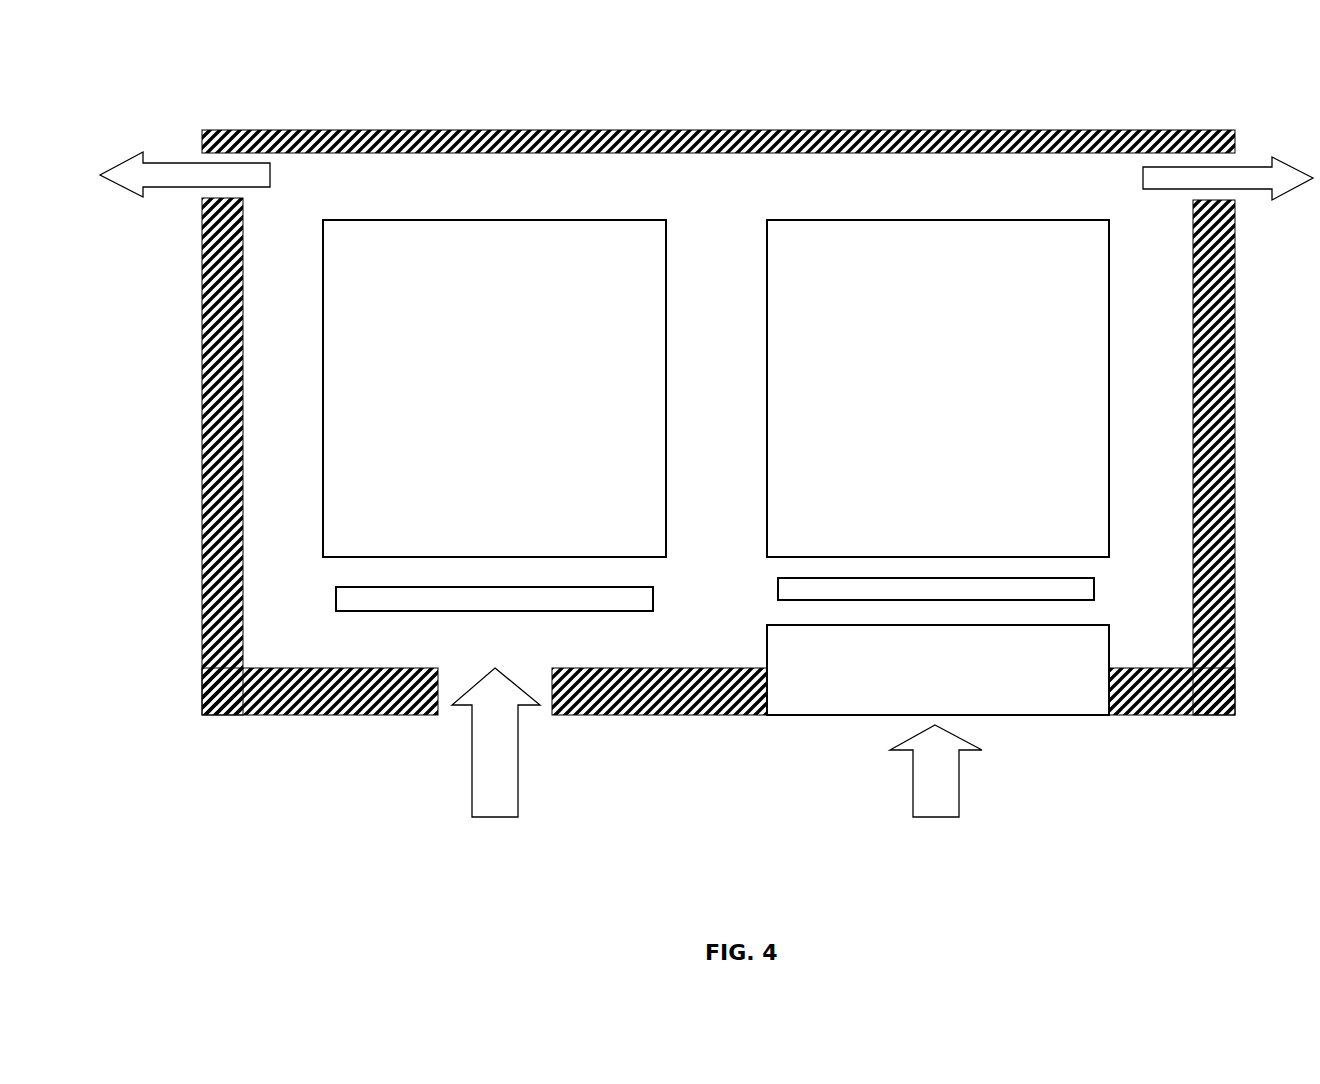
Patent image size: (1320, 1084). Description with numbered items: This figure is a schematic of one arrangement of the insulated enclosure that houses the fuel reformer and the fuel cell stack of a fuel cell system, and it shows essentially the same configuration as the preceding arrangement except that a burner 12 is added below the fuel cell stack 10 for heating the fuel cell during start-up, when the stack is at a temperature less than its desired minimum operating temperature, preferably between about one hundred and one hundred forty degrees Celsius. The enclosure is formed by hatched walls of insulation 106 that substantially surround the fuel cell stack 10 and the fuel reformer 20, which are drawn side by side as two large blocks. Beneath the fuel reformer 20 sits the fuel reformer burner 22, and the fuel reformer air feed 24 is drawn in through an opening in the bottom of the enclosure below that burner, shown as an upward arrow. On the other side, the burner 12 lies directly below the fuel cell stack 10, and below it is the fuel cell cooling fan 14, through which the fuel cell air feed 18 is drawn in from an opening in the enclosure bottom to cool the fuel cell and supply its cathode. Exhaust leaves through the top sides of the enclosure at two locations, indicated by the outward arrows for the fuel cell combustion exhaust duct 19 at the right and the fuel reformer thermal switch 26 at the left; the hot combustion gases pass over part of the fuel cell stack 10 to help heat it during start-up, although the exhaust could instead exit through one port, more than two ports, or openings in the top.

The fuel cell stack 10 is at (938, 388).
The burner 12 is at (1094, 592).
The fuel cell cooling fan 14 is at (938, 670).
The fuel cell air feed 18 is at (959, 805).
The fuel cell combustion exhaust duct 19 is at (1245, 166).
The fuel reformer 20 is at (494, 388).
The fuel reformer burner 22 is at (654, 603).
The fuel reformer air feed 24 is at (518, 805).
The fuel reformer thermal switch 26 is at (170, 163).
The insulation 106 is at (701, 131).